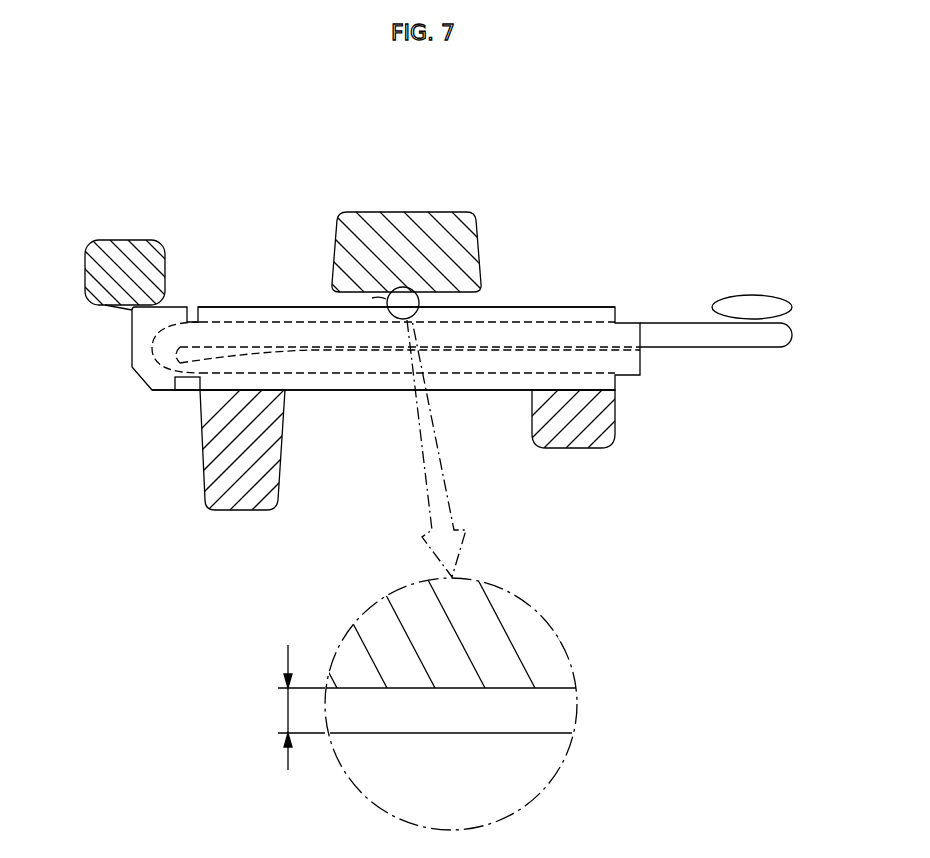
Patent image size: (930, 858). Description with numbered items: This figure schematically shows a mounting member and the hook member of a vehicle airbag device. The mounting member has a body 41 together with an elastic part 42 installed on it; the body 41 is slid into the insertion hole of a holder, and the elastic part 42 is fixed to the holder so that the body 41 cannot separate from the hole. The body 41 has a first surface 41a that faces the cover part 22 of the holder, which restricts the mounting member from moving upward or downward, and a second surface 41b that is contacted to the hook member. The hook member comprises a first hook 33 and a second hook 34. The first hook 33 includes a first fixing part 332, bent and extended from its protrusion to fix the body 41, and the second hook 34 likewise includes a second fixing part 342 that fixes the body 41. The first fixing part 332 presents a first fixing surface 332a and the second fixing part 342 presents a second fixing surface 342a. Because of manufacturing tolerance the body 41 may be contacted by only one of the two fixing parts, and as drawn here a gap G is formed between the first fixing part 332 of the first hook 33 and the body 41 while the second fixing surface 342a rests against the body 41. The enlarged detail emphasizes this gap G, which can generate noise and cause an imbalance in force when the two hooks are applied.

The cover part 22 is at (235, 495).
The first hook 33 is at (408, 200).
The first fixing part 332 is at (450, 245).
The first fixing surface 332a is at (372, 298).
The second hook 34 is at (132, 226).
The second fixing part 342 is at (125, 265).
The second fixing surface 342a is at (118, 307).
The body 41 is at (357, 393).
The first surface 41a is at (482, 393).
The second surface 41b is at (565, 305).
The elastic part 42 is at (682, 338).
The gap G is at (287, 707).